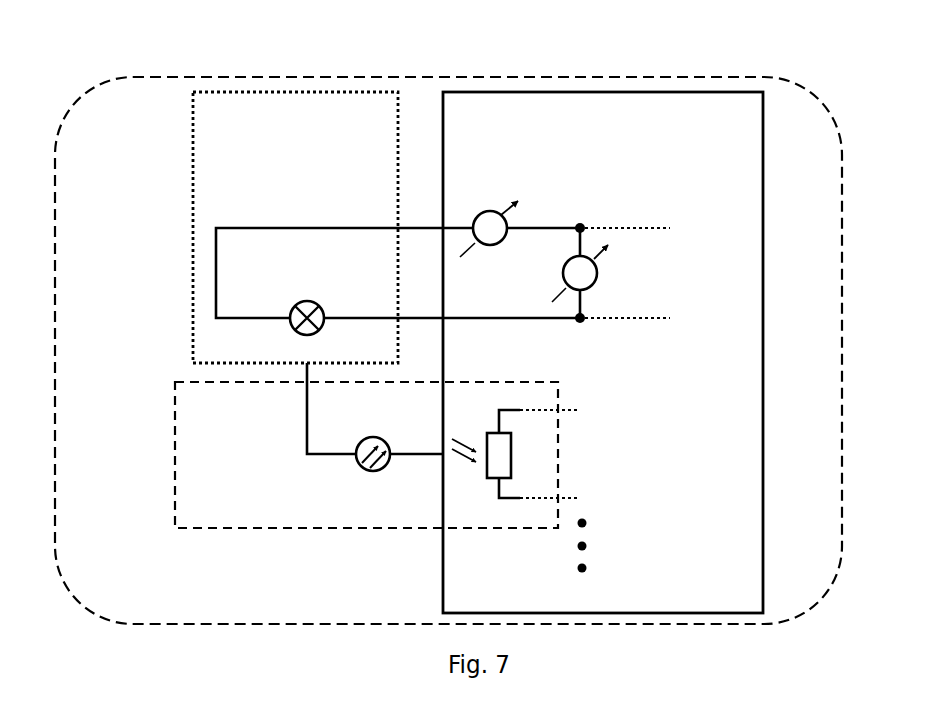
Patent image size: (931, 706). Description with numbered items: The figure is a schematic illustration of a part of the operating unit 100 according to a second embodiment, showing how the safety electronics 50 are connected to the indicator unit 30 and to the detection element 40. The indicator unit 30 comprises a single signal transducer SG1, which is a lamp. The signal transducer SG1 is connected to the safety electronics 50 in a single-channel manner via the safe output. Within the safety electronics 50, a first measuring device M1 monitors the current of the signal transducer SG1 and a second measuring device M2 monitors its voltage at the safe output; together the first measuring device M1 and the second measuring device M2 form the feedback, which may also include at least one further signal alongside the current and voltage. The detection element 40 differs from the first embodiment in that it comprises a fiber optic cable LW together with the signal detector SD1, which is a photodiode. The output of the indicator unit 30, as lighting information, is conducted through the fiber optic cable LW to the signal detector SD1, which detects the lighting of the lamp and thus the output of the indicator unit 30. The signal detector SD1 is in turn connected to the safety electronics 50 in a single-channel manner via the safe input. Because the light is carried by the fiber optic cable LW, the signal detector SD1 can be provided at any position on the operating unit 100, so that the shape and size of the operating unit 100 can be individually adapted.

The operating unit 100 is at (93, 88).
The indicator unit 30 is at (386, 273).
The detection element 40 is at (335, 452).
The safety electronics 50 is at (603, 352).
The first measuring device M1 is at (489, 214).
The second measuring device M2 is at (603, 273).
The signal transducer SG1 is at (304, 301).
The fiber optic cable LW is at (355, 465).
The signal detector SD1 is at (515, 454).